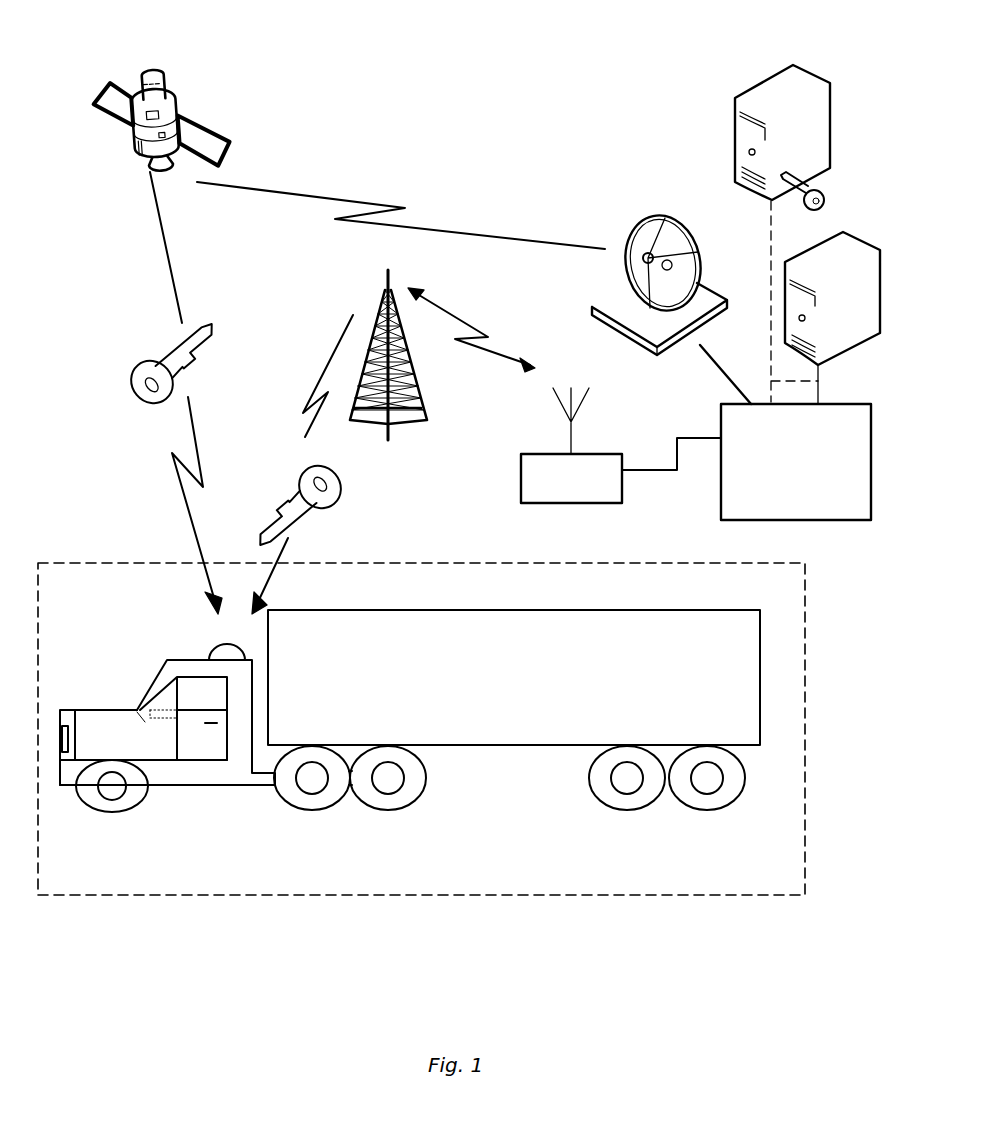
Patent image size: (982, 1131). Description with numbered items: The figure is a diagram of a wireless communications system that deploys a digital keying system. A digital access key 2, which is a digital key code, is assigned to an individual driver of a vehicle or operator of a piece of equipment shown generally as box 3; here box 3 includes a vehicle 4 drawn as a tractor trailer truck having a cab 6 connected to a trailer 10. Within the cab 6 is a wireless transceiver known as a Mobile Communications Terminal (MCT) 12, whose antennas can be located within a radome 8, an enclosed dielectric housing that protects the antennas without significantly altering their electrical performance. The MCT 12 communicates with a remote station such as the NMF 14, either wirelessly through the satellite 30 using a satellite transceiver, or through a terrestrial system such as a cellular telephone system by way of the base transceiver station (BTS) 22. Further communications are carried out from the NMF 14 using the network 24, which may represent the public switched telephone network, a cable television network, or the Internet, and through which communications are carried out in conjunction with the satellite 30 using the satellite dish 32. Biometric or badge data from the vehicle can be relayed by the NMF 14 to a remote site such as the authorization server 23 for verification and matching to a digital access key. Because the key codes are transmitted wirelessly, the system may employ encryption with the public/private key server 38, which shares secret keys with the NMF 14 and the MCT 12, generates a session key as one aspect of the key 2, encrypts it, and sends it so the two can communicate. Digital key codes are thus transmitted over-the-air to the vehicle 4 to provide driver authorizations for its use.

The digital access key 2 is at (142, 366).
The box 3 is at (402, 895).
The vehicle 4 is at (402, 698).
The cab 6 is at (143, 747).
The radome 8 is at (222, 644).
The trailer 10 is at (514, 677).
The Mobile Communications Terminal (MCT) 12 is at (140, 712).
The NMF 14 is at (571, 445).
The base transceiver station (BTS) 22 is at (385, 293).
The authorization server 23 is at (832, 298).
The network 24 is at (796, 462).
The satellite 30 is at (196, 142).
The satellite dish 32 is at (664, 212).
The public/private key server 38 is at (735, 142).